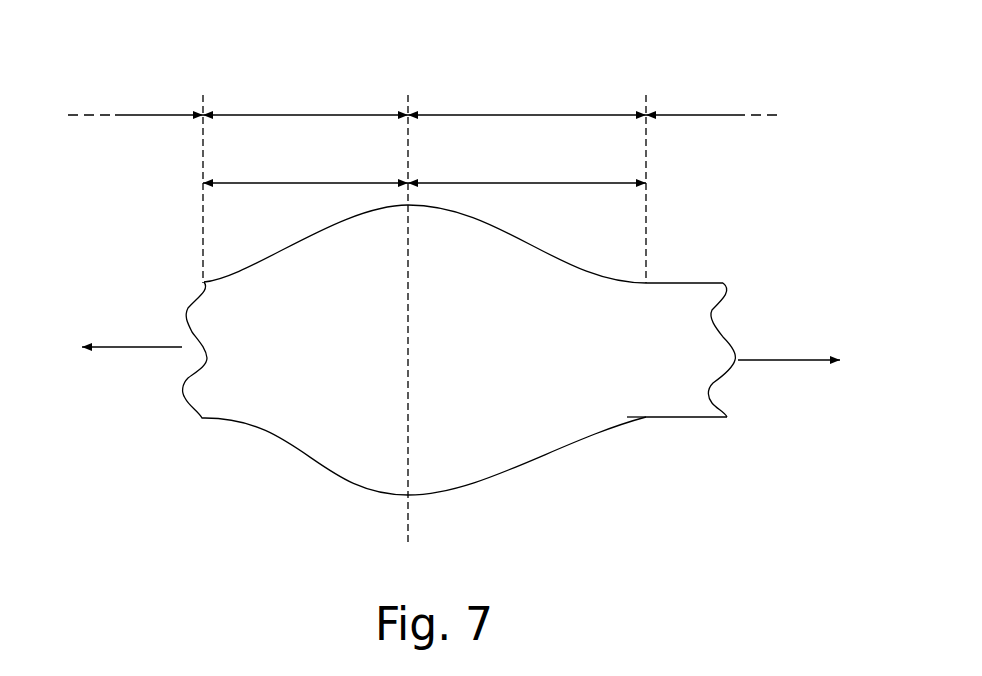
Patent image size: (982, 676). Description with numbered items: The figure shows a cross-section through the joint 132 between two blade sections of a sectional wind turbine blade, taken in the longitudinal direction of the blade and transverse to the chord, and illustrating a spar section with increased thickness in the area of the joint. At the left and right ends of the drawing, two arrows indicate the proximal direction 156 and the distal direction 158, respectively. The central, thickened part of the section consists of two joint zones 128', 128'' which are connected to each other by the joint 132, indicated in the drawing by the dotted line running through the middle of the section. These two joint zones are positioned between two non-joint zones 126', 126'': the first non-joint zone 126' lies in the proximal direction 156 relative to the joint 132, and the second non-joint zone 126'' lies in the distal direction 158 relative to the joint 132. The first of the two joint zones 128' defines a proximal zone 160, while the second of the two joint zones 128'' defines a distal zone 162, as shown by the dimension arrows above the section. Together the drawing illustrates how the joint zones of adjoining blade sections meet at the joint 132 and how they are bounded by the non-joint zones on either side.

The first non-joint zone 126' is at (142, 90).
The second non-joint zone 126'' is at (713, 89).
The first joint zone 128' is at (305, 90).
The second joint zone 128'' is at (527, 90).
The joint 132 is at (410, 513).
The proximal direction 156 is at (148, 350).
The distal direction 158 is at (790, 362).
The proximal zone 160 is at (293, 183).
The distal zone 162 is at (517, 183).